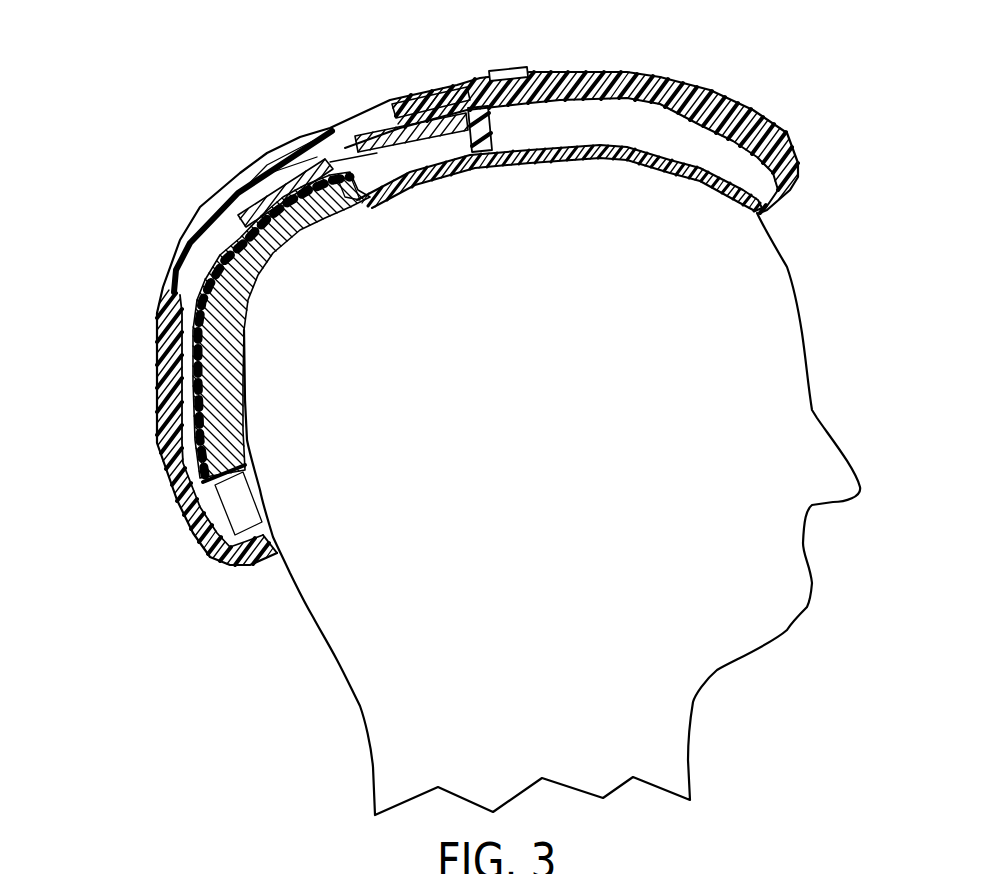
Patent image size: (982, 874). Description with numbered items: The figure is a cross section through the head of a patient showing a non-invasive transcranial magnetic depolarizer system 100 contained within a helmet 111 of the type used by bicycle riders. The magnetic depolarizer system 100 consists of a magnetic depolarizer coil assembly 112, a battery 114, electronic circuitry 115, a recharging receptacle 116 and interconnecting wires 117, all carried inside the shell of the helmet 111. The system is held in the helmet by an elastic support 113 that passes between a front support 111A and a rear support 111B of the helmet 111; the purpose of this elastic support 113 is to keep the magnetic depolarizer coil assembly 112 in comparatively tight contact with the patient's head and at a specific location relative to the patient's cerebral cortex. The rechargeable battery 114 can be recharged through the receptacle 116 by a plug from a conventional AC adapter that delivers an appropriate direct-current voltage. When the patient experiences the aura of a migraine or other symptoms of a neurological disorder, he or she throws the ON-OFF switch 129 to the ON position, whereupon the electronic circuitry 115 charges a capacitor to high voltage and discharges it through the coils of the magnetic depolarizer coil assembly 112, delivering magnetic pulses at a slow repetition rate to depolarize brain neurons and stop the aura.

The non-invasive transcranial magnetic depolarizer system 100 is at (139, 143).
The helmet 111 is at (653, 72).
The front support 111A is at (492, 140).
The rear support 111B is at (205, 490).
The magnetic depolarizer coil assembly 112 is at (240, 228).
The elastic support 113 is at (653, 153).
The battery 114 is at (270, 170).
The electronic circuitry 115 is at (430, 93).
The recharging receptacle 116 is at (397, 98).
The interconnecting wires 117 is at (340, 132).
The ON-OFF switch 129 is at (503, 63).